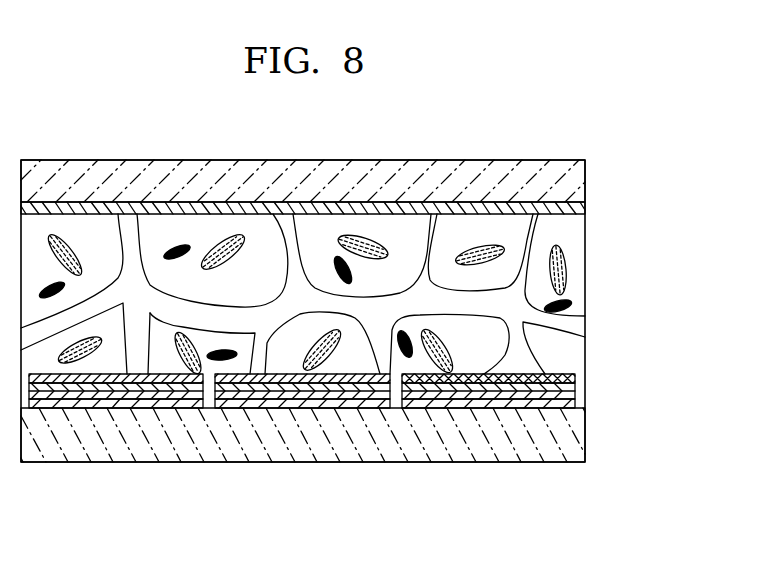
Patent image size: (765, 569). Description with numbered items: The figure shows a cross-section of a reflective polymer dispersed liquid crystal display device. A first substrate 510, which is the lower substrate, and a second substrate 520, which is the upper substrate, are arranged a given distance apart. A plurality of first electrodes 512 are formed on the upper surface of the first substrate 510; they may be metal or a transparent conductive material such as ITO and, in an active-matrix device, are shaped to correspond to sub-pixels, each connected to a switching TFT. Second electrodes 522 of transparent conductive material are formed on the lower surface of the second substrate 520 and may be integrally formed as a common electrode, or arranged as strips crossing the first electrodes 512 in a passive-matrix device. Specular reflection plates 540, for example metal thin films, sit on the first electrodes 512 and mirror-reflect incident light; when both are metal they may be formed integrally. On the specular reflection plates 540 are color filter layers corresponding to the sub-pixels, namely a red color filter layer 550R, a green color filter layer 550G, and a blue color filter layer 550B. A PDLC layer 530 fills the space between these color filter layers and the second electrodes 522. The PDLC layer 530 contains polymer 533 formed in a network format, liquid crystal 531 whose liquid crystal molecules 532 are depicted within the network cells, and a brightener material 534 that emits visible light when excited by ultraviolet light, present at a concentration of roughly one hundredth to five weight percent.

The first substrate 510 is at (585, 432).
The first electrodes 512 is at (173, 408).
The second substrate 520 is at (583, 184).
The second electrodes 522 is at (585, 209).
The PDLC layer 530 is at (377, 295).
The liquid crystal 531 is at (580, 242).
The liquid crystal molecules 532 is at (565, 273).
The polymer 533 is at (577, 332).
The brightener material 534 is at (563, 305).
The specular reflection plates 540 is at (118, 397).
The red color filter layer 550R is at (63, 383).
The green color filter layer 550G is at (253, 383).
The blue color filter layer 550B is at (438, 383).